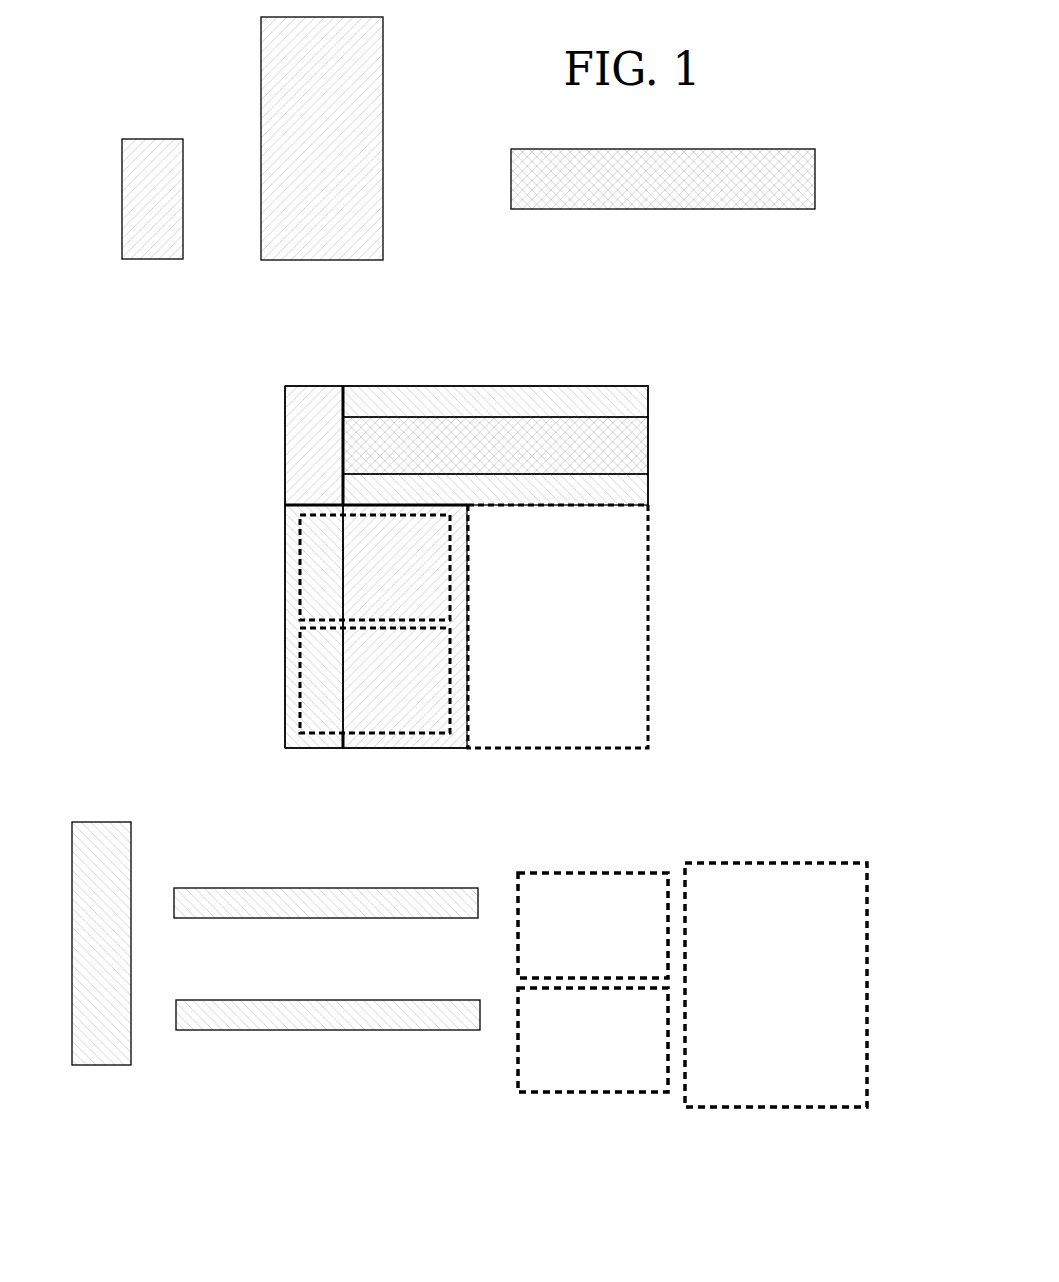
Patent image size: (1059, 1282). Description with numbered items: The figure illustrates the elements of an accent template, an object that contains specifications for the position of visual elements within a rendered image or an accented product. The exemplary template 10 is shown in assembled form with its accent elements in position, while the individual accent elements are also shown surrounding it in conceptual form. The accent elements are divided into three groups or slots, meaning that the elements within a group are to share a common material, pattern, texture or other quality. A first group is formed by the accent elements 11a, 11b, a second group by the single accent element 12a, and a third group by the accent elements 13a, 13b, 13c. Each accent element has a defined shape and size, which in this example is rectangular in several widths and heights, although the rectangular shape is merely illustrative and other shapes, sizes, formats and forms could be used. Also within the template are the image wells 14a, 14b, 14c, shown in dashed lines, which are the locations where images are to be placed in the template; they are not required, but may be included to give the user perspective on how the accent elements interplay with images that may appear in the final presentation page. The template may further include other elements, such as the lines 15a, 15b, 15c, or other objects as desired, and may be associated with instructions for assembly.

The template 10 is at (181, 568).
The accent element 11a is at (154, 139).
The accent element 11b is at (261, 85).
The accent element 12a is at (651, 210).
The accent element 13a is at (100, 822).
The accent element 13b is at (246, 888).
The accent element 13c is at (280, 1000).
The image well 14a is at (484, 746).
The image well 14b is at (484, 860).
The image well 14c is at (667, 806).
The line 15a is at (345, 360).
The line 15b is at (257, 505).
The line 15c is at (346, 778).